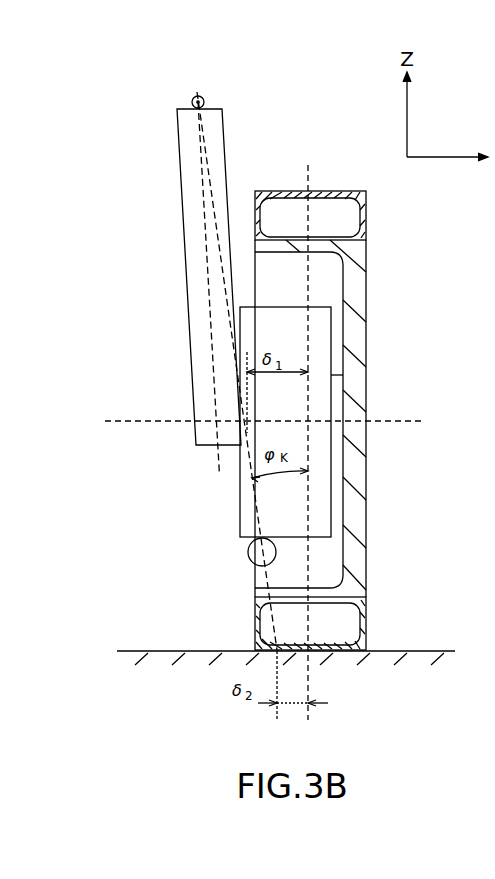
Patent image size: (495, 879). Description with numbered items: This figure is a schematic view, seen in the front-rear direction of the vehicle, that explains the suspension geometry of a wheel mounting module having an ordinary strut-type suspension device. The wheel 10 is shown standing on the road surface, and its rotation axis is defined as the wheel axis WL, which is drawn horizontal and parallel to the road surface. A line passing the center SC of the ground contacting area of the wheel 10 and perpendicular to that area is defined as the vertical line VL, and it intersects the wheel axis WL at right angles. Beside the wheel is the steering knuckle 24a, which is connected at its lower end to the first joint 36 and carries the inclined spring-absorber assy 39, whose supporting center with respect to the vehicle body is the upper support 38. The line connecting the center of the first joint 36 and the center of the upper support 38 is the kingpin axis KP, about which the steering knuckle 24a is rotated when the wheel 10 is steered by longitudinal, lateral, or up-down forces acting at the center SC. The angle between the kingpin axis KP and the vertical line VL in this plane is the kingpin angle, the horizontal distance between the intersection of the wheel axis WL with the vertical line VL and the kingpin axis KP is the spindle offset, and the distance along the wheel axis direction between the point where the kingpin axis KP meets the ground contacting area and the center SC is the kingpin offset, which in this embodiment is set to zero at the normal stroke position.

The wheel 10 is at (362, 268).
The steering knuckle 24a is at (322, 517).
The first joint 36 is at (250, 553).
The upper support 38 is at (204, 98).
The spring-absorber assy 39 is at (182, 312).
The vertical line VL is at (350, 348).
The wheel axis WL is at (410, 421).
The kingpin axis KP is at (250, 500).
The center of ground contacting area SC is at (310, 655).